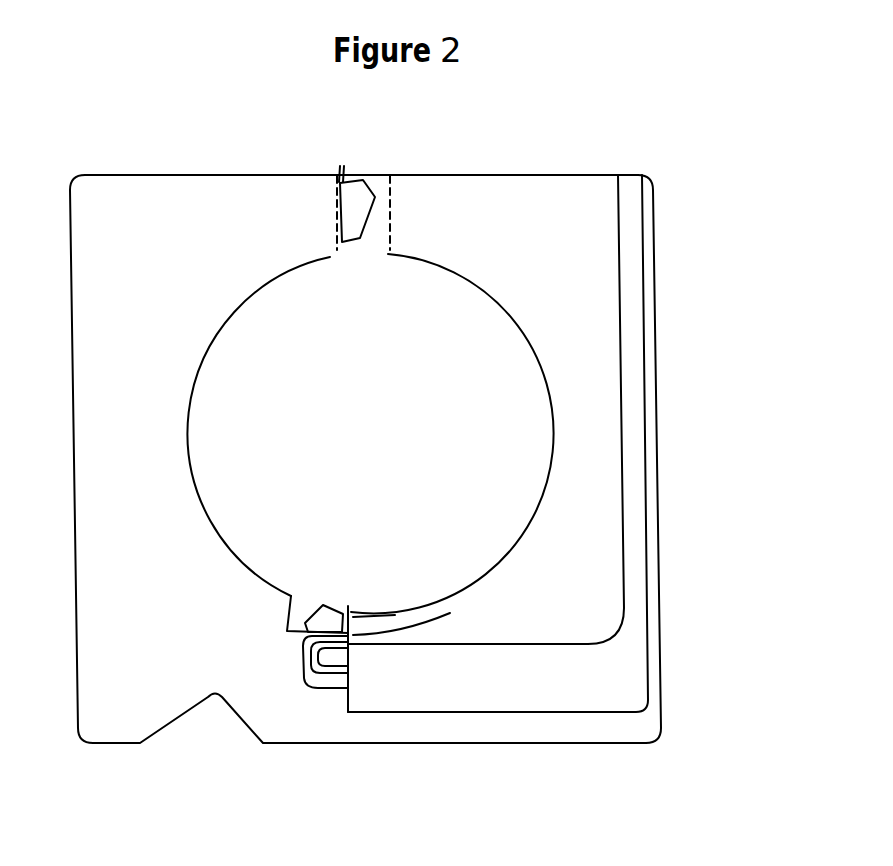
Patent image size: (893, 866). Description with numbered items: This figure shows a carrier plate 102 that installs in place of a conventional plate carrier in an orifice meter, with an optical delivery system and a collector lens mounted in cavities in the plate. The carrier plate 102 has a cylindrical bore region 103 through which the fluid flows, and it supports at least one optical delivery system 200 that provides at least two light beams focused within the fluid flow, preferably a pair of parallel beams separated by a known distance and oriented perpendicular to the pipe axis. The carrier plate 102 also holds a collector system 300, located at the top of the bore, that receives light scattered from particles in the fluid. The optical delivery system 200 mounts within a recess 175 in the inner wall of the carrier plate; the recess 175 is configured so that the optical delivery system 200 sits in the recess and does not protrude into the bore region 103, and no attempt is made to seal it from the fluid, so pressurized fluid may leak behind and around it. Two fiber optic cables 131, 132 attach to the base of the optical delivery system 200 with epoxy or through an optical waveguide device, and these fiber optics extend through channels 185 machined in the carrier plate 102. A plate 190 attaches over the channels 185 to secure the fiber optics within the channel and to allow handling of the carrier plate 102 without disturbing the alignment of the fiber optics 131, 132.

The carrier plate 102 is at (558, 192).
The bore region 103 is at (438, 263).
The collector system 300 is at (353, 250).
The plate 190 is at (653, 660).
The recess 175 is at (292, 607).
The optical delivery system 200 is at (319, 604).
The fiber optic cable 132 is at (437, 611).
The fiber optic cable 131 is at (396, 616).
The channels 185 is at (318, 689).